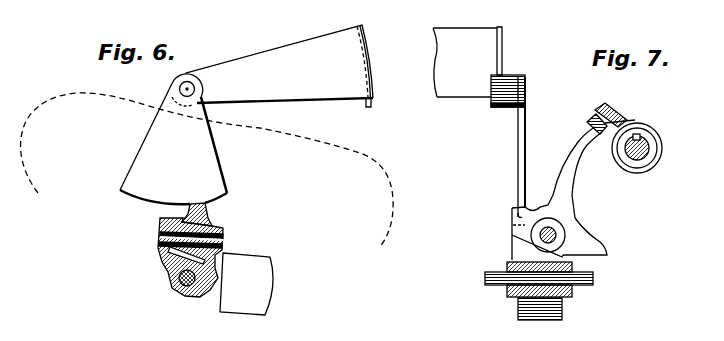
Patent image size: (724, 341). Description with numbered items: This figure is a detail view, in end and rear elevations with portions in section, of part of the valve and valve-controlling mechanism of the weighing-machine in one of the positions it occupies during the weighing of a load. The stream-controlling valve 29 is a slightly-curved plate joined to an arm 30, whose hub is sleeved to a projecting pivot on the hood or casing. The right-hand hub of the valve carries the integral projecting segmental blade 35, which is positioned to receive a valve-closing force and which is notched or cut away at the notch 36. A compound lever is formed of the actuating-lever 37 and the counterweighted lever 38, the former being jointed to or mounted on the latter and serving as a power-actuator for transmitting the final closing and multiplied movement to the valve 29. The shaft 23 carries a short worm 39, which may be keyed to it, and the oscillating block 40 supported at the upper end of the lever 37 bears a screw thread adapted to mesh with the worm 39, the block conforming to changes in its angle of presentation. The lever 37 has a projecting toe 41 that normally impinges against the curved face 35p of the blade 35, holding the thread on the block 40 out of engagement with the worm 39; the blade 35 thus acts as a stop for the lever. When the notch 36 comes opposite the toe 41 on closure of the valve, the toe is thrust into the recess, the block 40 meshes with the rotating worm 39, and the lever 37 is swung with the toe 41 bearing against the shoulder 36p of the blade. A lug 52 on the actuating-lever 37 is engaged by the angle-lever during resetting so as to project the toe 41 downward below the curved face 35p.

In FIG. 7, the shaft 23 is at (648, 143).
In FIG. 6, the stream-controlling valve 29 is at (368, 100).
In FIG. 7, the stream-controlling valve 29 is at (465, 62).
In FIG. 6, the valve arm 30 is at (295, 53).
In FIG. 7, the valve arm 30 is at (502, 53).
In FIG. 6, the segmental blade 35 is at (210, 143).
In FIG. 7, the segmental blade 35 is at (518, 133).
In FIG. 6, the curved face 35p is at (140, 205).
In FIG. 6, the notch 36 is at (208, 203).
In FIG. 6, the shoulder 36p is at (188, 203).
In FIG. 6, the actuating-lever 37 is at (210, 222).
In FIG. 7, the actuating-lever 37 is at (577, 182).
In FIG. 6, the counterweighted lever 38 is at (213, 283).
In FIG. 7, the counterweighted lever 38 is at (517, 298).
In FIG. 7, the worm 39 is at (662, 154).
In FIG. 7, the oscillating block 40 is at (628, 120).
In FIG. 7, the projecting toe 41 is at (512, 212).
In FIG. 7, the lug 52 is at (598, 242).